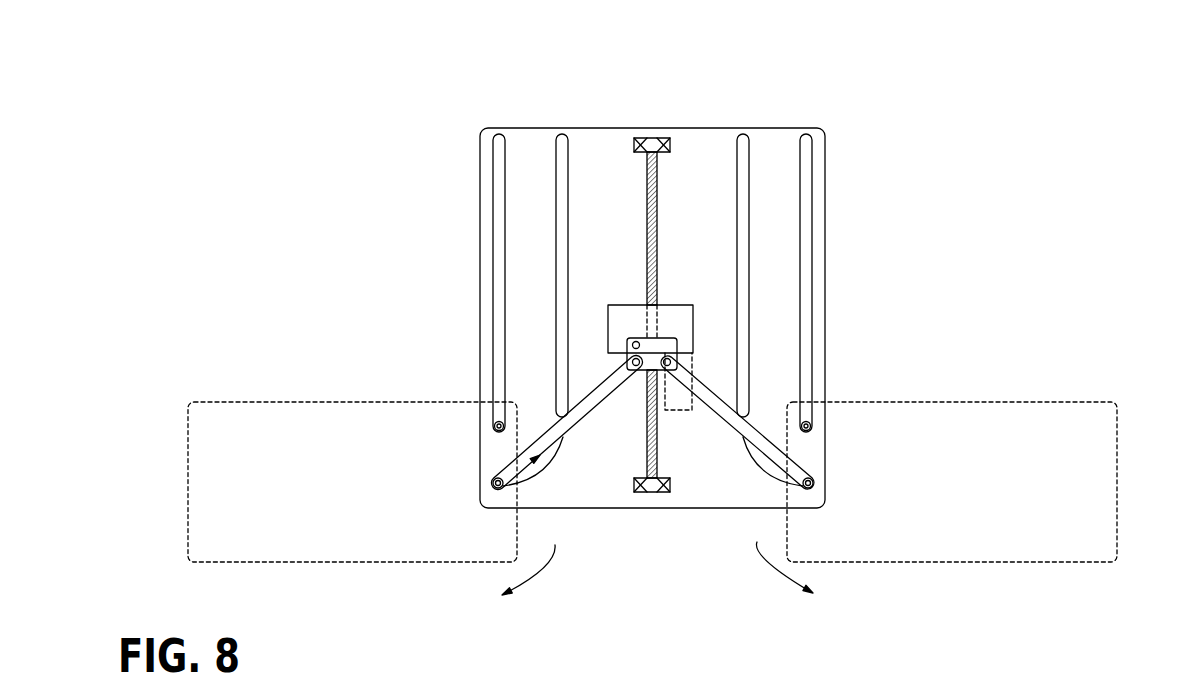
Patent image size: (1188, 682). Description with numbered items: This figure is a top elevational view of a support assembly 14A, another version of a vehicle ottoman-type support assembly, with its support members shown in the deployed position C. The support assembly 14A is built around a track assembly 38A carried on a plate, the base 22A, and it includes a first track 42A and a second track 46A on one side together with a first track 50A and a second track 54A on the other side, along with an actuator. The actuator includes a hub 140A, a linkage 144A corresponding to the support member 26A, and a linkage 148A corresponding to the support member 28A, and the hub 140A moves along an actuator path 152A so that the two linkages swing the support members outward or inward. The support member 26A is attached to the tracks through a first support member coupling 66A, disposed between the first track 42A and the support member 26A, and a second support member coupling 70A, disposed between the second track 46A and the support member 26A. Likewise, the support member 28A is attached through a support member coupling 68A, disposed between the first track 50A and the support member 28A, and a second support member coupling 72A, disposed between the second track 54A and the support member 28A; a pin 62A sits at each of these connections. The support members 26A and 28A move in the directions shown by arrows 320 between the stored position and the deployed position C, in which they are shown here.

The support assembly 14A is at (858, 100).
The plate 22A is at (827, 235).
The support member 26A is at (1100, 450).
The support member 28A is at (200, 458).
The track assembly 38A is at (764, 143).
The first track 42A is at (740, 148).
The second track 46A is at (808, 150).
The first track 50A is at (562, 148).
The second track 54A is at (500, 168).
The pin 62A is at (500, 453).
The first support member coupling 66A is at (812, 486).
The support member coupling 68A is at (497, 486).
The second support member coupling 70A is at (806, 426).
The second support member coupling 72A is at (498, 426).
The hub 140A is at (674, 315).
The linkage 144A is at (720, 403).
The linkage 148A is at (593, 397).
The actuator path 152A is at (645, 195).
The arrows 320 is at (543, 568).
The deployed position C is at (242, 398).